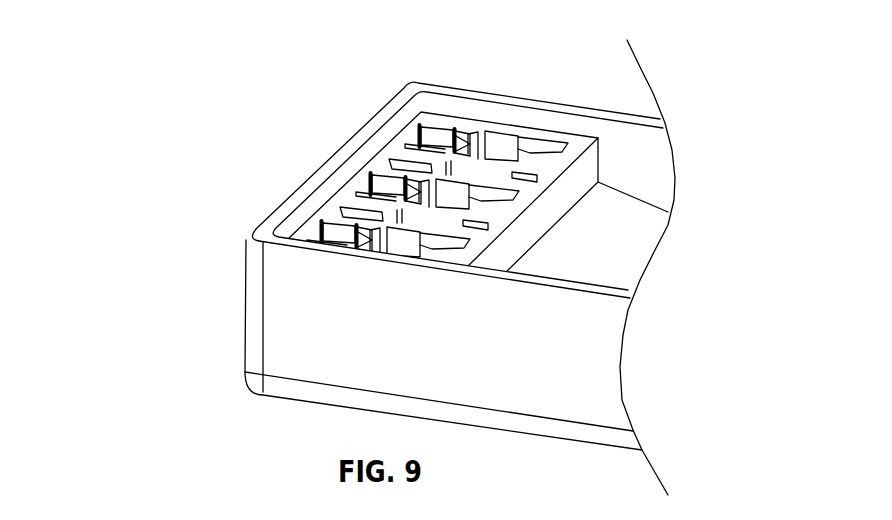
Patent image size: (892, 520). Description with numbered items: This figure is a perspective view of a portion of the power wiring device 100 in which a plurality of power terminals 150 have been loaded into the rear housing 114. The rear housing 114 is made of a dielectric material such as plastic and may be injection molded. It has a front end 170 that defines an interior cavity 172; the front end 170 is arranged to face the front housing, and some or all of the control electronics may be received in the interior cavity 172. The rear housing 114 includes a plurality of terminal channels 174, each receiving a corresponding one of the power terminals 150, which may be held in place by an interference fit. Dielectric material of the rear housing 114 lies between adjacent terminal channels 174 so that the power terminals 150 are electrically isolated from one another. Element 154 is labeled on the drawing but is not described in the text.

The power wiring device 100 is at (166, 297).
The rear housing 114 is at (250, 318).
The power terminals 150 is at (478, 138).
The connector 154 is at (417, 130).
The front end 170 is at (645, 117).
The interior cavity 172 is at (580, 122).
The terminal channels 174 is at (507, 148).